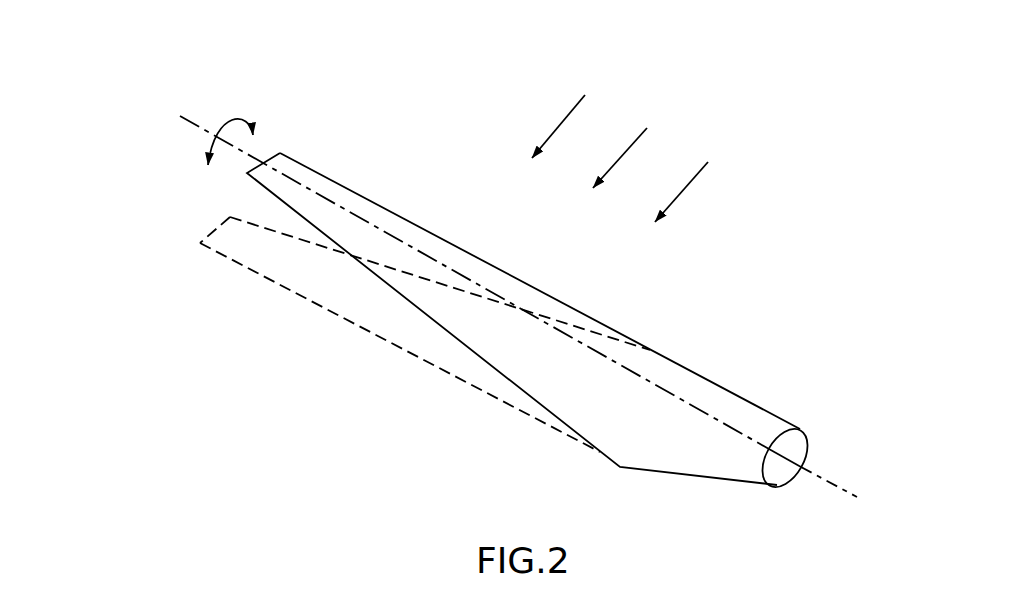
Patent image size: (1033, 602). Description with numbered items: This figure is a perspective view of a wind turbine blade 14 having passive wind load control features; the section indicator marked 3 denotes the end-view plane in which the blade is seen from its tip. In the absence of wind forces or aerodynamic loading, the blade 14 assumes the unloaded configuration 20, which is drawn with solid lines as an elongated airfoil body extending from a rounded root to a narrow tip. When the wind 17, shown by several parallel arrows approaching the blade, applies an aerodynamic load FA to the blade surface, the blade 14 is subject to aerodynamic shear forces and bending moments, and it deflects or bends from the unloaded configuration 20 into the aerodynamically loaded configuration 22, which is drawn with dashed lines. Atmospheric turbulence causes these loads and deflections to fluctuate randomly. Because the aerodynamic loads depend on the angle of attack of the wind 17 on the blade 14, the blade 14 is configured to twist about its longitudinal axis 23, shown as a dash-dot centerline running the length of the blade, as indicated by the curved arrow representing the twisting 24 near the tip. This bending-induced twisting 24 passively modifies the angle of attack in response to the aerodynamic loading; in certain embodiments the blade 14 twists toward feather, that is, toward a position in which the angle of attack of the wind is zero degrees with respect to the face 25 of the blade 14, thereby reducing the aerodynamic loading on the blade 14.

The section line 3- 3 is at (31, 90).
The wind turbine blade 14 is at (765, 65).
The wind 17 is at (563, 121).
The unloaded configuration 20 is at (532, 308).
The aerodynamically loaded configuration 22 is at (243, 268).
The longitudinal axis 23 is at (840, 487).
The bending-induced twisting 24 is at (228, 120).
The face of the blade 25 is at (381, 217).
The aerodynamic load FA is at (515, 267).